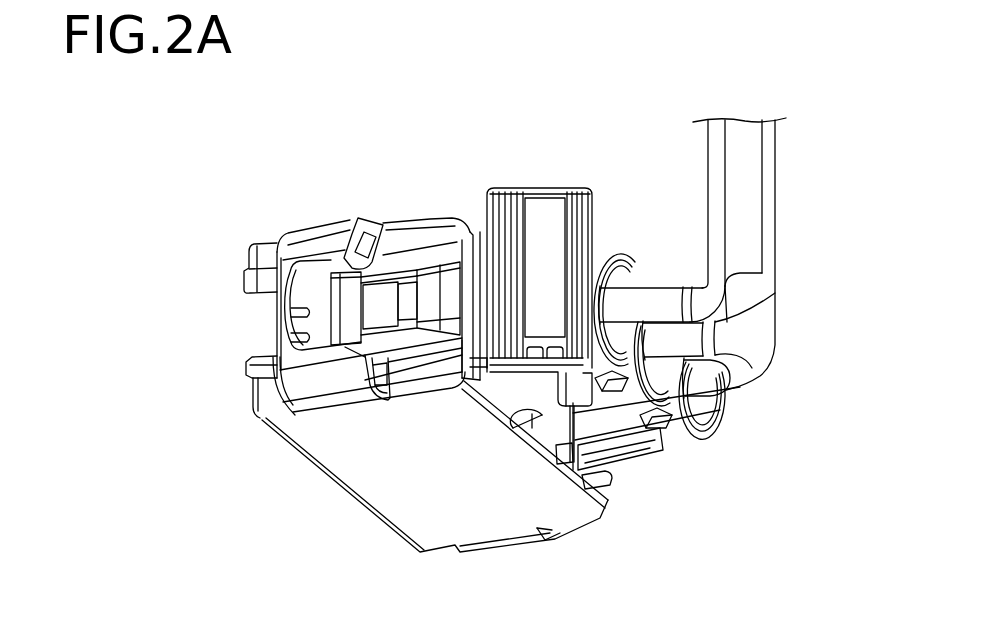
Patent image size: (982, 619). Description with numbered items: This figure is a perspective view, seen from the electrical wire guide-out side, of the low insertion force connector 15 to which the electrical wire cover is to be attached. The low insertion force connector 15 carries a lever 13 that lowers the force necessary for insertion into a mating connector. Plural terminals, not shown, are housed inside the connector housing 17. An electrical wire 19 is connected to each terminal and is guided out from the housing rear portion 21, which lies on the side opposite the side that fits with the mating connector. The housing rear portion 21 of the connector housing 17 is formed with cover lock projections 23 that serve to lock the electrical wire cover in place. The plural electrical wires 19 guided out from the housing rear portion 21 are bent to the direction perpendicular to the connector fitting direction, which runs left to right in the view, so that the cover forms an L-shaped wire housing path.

The lever 13 is at (540, 188).
The low insertion force connector 15 is at (313, 203).
The connector housing 17 is at (325, 455).
The electrical wire 19 is at (715, 232).
The housing rear portion 21 is at (680, 437).
The cover lock projections 23 is at (617, 378).